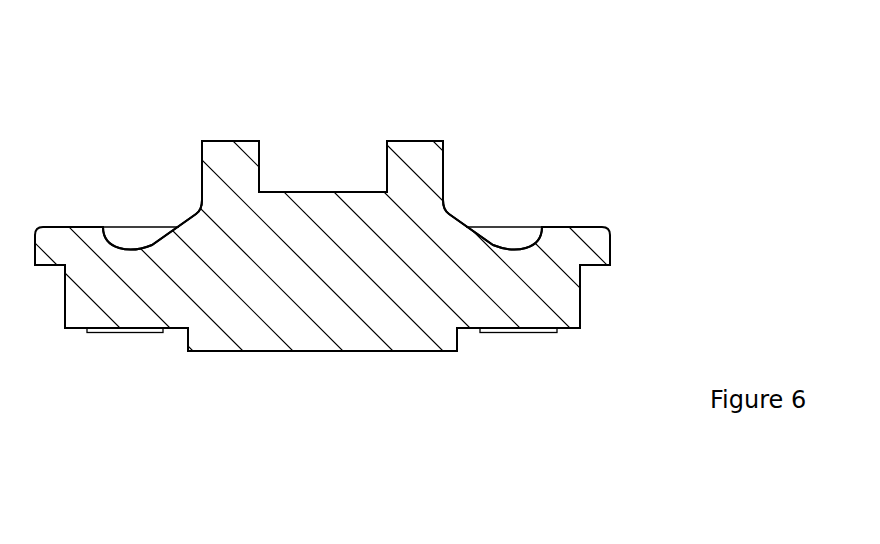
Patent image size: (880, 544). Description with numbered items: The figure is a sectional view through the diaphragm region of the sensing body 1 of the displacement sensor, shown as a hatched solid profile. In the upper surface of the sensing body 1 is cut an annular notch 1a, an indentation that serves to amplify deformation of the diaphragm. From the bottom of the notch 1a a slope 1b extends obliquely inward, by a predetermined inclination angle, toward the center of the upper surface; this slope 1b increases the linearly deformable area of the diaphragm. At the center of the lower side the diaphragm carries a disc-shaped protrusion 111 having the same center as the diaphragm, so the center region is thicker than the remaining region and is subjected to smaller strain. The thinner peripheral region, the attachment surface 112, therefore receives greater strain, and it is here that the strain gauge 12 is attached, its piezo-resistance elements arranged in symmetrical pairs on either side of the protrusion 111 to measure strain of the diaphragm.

The sensing body 1 is at (124, 85).
The annular notch 1a is at (117, 230).
The slope 1b is at (182, 223).
The strain gauge 12 is at (118, 346).
The disc-shaped protrusion 111 is at (353, 333).
The attachment surface 112 is at (470, 347).